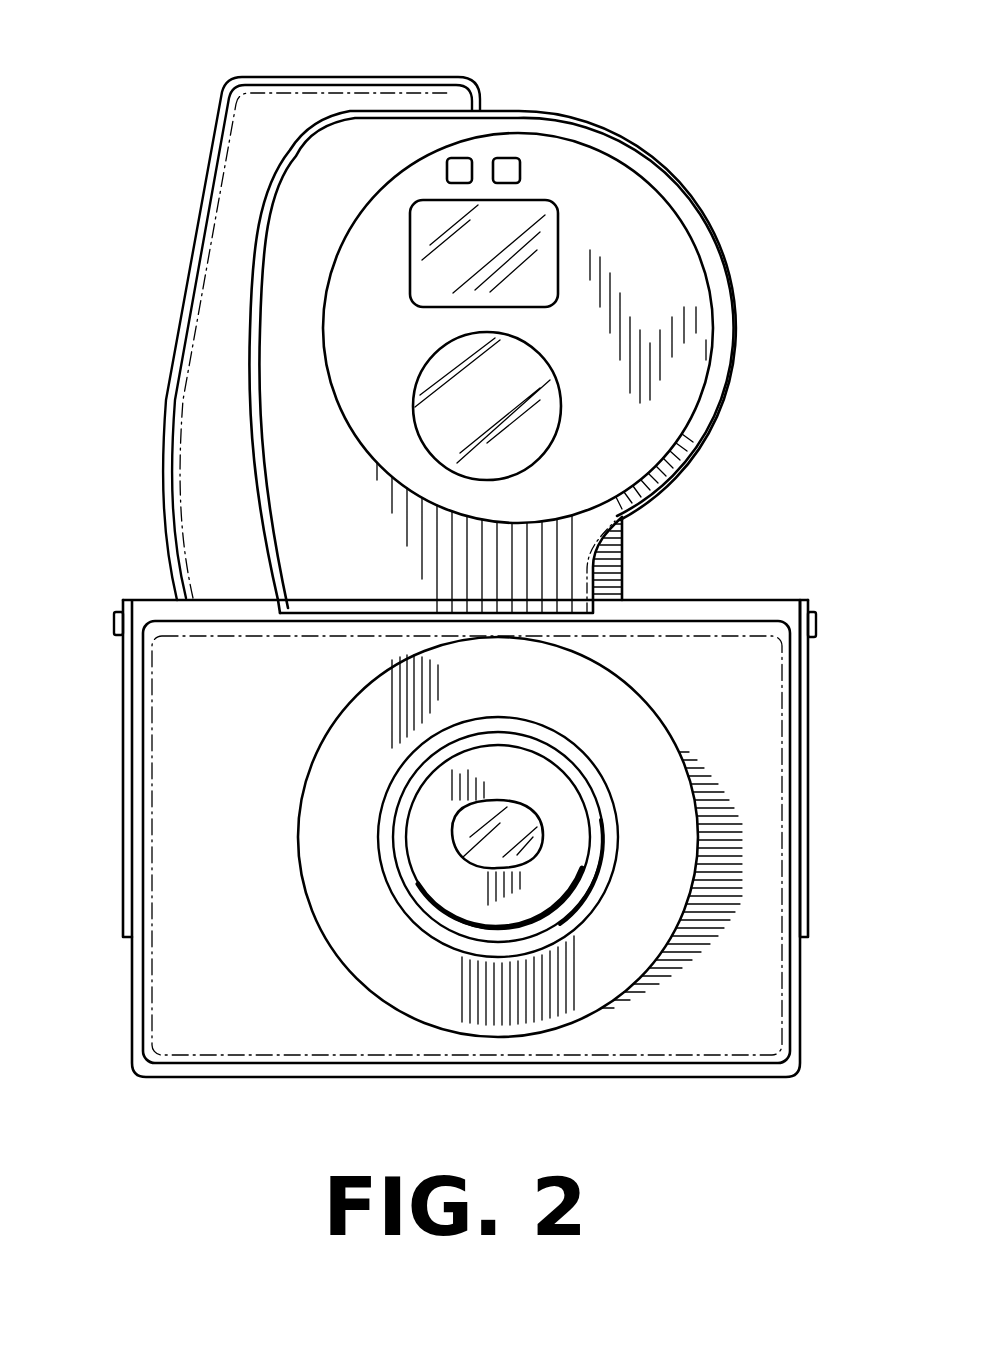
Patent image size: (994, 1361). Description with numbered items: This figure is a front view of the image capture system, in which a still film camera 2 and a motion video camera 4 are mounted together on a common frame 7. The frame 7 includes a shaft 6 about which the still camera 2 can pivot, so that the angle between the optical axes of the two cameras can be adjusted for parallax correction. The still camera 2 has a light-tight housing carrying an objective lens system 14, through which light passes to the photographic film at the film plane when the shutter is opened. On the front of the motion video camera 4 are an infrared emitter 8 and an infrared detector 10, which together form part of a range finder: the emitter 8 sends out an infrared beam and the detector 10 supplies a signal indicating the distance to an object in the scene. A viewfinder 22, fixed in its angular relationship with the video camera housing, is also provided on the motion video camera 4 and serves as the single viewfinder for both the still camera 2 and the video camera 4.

The still film camera 2 is at (500, 864).
The motion video camera 4 is at (652, 446).
The shaft 6 is at (114, 627).
The common frame 7 is at (118, 796).
The infrared emitter 8 is at (460, 158).
The infrared detector 10 is at (507, 158).
The objective lens system 14 is at (530, 823).
The viewfinder 22 is at (550, 213).